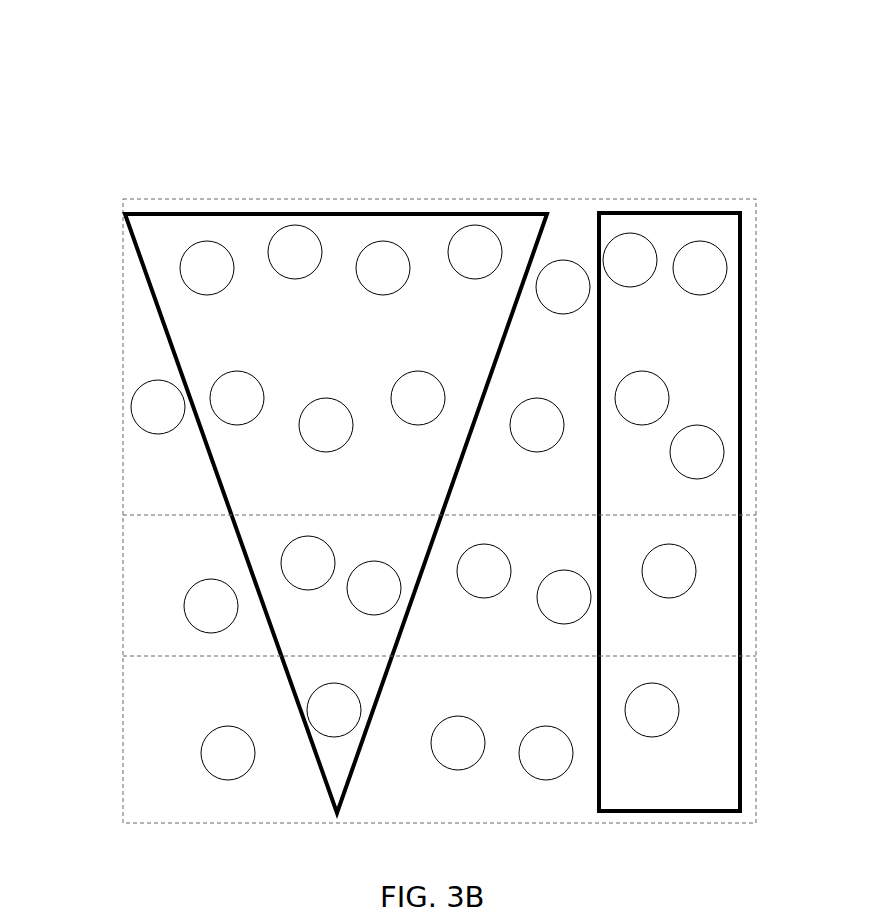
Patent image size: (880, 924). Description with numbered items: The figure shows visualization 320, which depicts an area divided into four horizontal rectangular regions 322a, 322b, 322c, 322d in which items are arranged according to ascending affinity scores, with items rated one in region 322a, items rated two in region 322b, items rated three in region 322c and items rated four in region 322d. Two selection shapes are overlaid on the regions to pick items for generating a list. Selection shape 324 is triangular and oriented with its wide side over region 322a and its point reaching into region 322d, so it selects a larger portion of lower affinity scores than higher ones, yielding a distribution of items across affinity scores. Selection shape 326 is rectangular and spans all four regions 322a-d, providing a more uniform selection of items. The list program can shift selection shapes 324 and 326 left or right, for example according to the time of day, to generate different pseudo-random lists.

The visualization 320 is at (662, 120).
The rectangular region 322a is at (122, 285).
The rectangular region 322b is at (122, 428).
The rectangular region 322c is at (122, 586).
The rectangular region 322d is at (122, 745).
The selection shape 324 is at (322, 212).
The selection shape 326 is at (670, 212).